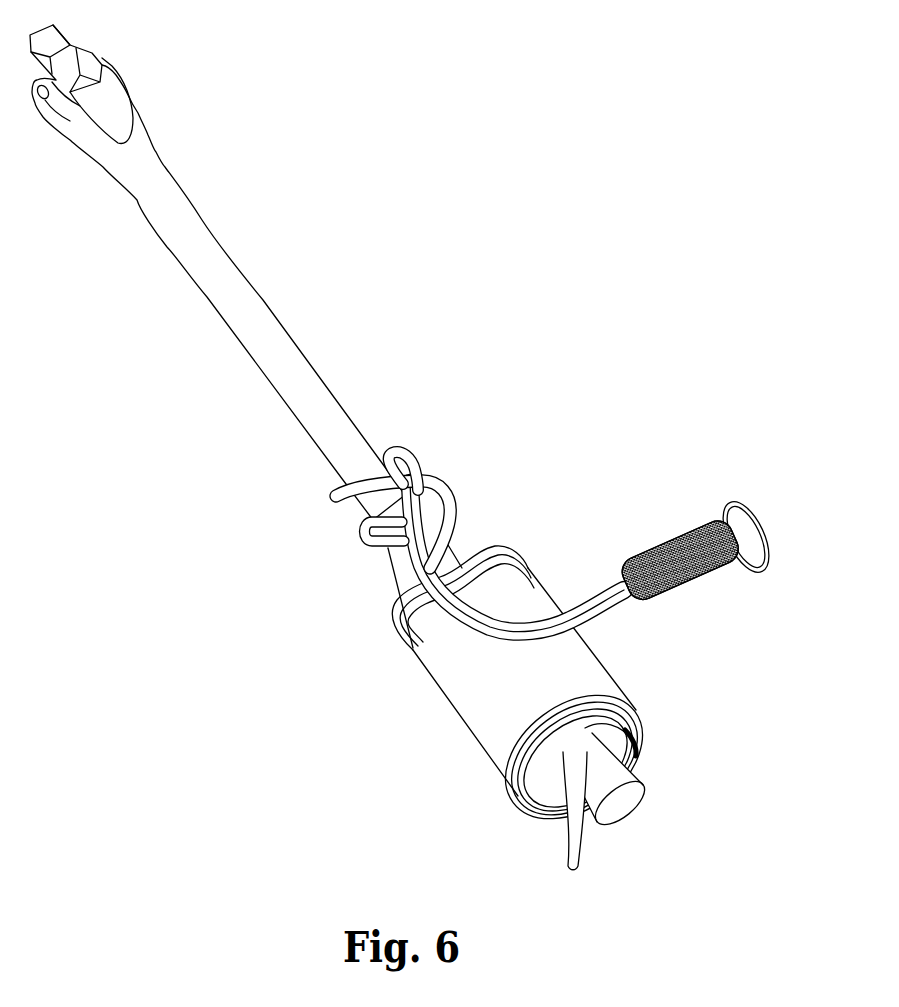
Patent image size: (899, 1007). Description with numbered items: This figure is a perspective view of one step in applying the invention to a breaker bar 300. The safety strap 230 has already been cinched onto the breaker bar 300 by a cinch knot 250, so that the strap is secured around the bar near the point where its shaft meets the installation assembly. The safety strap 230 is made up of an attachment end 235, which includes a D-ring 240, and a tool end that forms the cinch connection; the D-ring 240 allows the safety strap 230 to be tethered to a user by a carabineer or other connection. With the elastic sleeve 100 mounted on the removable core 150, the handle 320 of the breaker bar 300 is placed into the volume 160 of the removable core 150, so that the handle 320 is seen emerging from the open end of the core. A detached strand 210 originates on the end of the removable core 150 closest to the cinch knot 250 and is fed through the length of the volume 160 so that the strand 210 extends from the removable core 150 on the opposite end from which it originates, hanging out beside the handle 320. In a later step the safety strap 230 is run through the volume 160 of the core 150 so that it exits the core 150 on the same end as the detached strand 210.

The elastic sleeve 100 is at (521, 695).
The removable core 150 is at (388, 603).
The volume 160 is at (641, 749).
The detached strand 210 is at (563, 865).
The safety strap 230 is at (586, 578).
The attachment end 235 is at (694, 588).
The D-ring 240 is at (768, 519).
The cinch knot 250 is at (343, 522).
The breaker bar 300 is at (337, 347).
The handle 320 is at (633, 825).